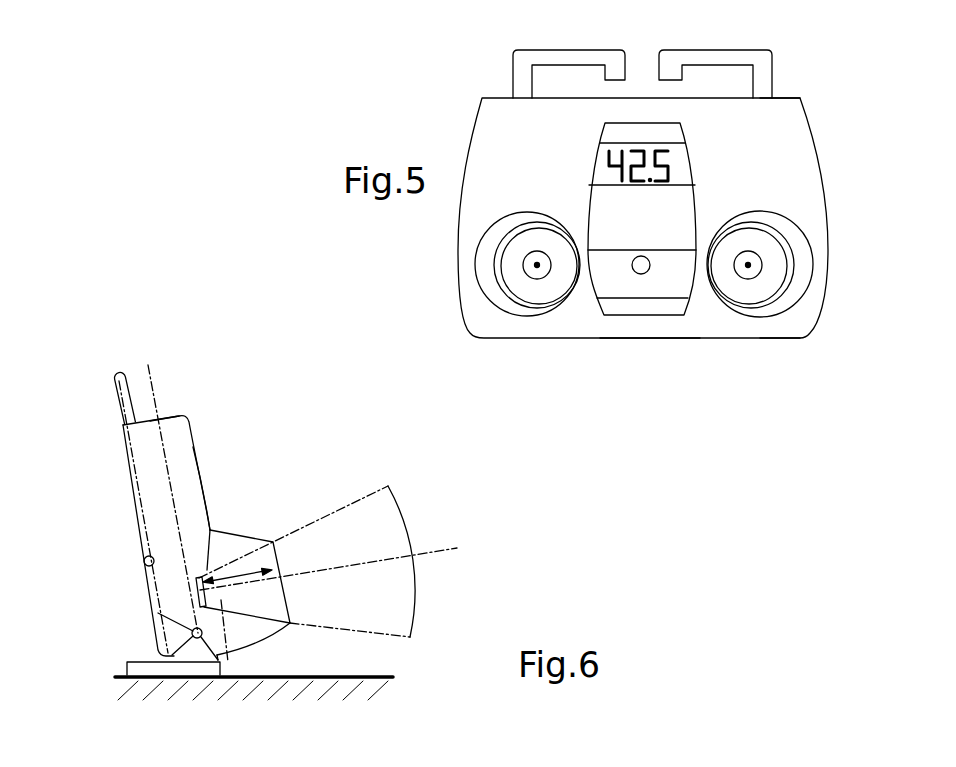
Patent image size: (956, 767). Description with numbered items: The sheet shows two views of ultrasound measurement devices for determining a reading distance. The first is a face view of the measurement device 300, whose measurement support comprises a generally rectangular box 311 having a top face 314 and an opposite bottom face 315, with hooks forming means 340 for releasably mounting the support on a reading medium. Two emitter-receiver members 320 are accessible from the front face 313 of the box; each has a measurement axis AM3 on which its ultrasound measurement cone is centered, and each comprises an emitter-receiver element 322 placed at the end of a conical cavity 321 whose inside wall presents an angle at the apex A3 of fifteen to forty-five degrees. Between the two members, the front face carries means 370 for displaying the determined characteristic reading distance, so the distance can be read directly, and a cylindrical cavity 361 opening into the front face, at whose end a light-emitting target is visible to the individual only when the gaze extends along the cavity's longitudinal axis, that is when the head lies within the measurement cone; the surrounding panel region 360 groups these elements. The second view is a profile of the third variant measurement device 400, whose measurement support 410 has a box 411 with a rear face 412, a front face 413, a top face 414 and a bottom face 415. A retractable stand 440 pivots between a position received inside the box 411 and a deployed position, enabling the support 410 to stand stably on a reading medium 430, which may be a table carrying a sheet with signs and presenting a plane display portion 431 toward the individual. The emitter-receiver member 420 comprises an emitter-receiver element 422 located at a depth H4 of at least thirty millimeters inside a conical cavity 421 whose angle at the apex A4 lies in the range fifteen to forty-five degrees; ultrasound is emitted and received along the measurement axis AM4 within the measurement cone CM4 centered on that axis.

In FIG. 5, the measurement device 300 is at (632, 202).
In FIG. 5, the box 311 is at (810, 157).
In FIG. 5, the front face 313 is at (632, 328).
In FIG. 5, the top face 314 is at (782, 98).
In FIG. 5, the bottom face 315 is at (782, 340).
In FIG. 5, the emitter-receiver member 320 is at (492, 315).
In FIG. 5, the conical cavity 321 is at (538, 236).
In FIG. 5, the emitter-receiver element 322 is at (545, 272).
In FIG. 5, the releasable mounting means 340 is at (572, 52).
In FIG. 5, the control panel 360 is at (648, 251).
In FIG. 5, the cylindrical cavity 361 is at (636, 257).
In FIG. 5, the means for displaying the determined characteristic reading distance 370 is at (682, 163).
In FIG. 5, the measurement axis AM3 is at (532, 260).
In FIG. 5, the angle at the apex A3 is at (397, 4).
In FIG. 6, the measurement device 400 is at (276, 544).
In FIG. 6, the measurement support 410 is at (180, 440).
In FIG. 6, the box 411 is at (270, 610).
In FIG. 6, the rear face 412 is at (131, 475).
In FIG. 6, the front face 413 is at (202, 482).
In FIG. 6, the top face 414 is at (170, 416).
In FIG. 6, the bottom face 415 is at (228, 676).
In FIG. 6, the emitter-receiver member 420 is at (226, 575).
In FIG. 6, the conical cavity 421 is at (282, 560).
In FIG. 6, the emitter-receiver element 422 is at (194, 592).
In FIG. 6, the reading medium 430 is at (155, 683).
In FIG. 6, the plane display portion 431 is at (372, 674).
In FIG. 6, the stand 440 is at (134, 657).
In FIG. 6, the measurement cone CM4 is at (338, 512).
In FIG. 6, the depth H4 is at (240, 567).
In FIG. 6, the measurement axis AM4 is at (446, 553).
In FIG. 6, the angle at the apex A4 is at (410, 617).